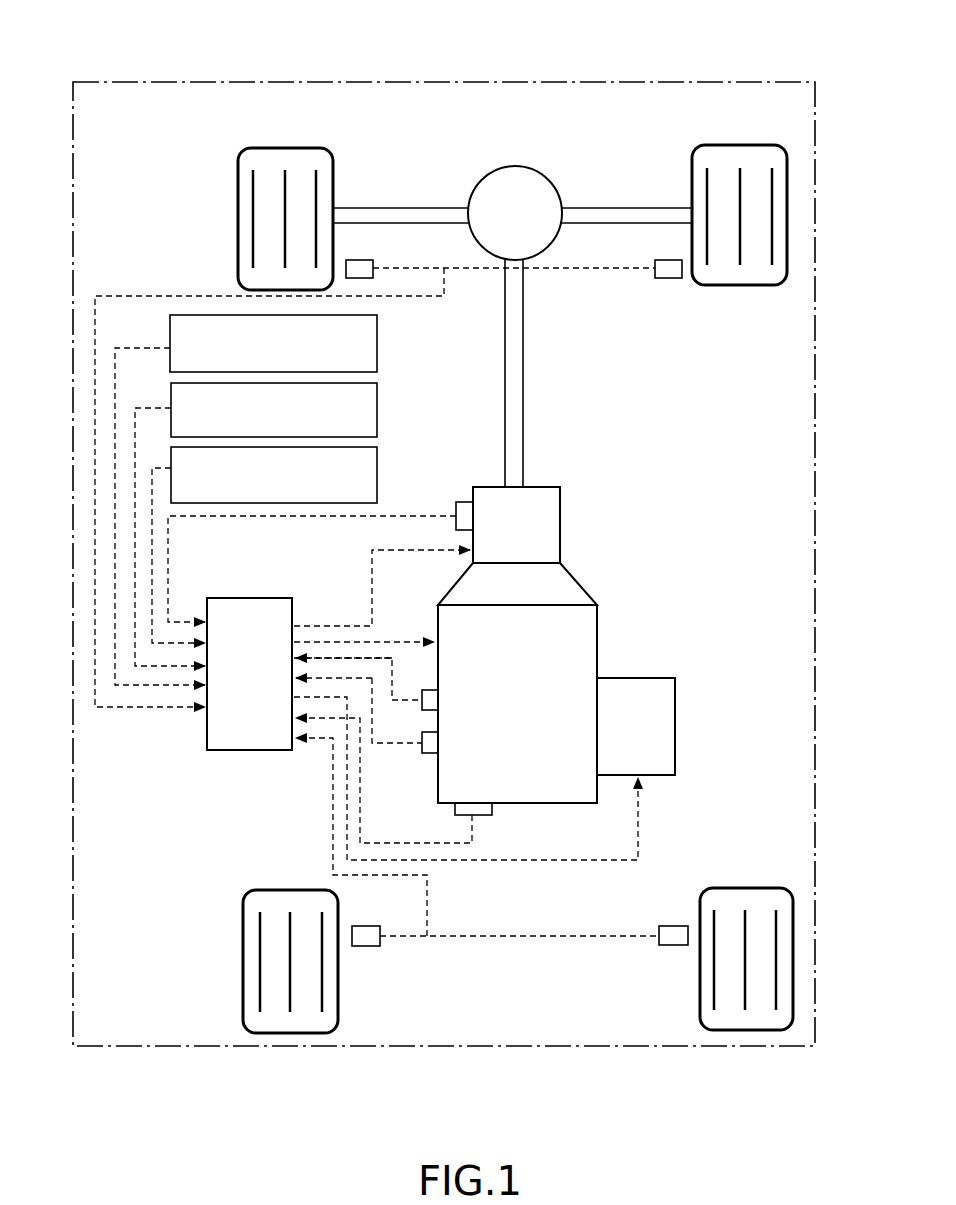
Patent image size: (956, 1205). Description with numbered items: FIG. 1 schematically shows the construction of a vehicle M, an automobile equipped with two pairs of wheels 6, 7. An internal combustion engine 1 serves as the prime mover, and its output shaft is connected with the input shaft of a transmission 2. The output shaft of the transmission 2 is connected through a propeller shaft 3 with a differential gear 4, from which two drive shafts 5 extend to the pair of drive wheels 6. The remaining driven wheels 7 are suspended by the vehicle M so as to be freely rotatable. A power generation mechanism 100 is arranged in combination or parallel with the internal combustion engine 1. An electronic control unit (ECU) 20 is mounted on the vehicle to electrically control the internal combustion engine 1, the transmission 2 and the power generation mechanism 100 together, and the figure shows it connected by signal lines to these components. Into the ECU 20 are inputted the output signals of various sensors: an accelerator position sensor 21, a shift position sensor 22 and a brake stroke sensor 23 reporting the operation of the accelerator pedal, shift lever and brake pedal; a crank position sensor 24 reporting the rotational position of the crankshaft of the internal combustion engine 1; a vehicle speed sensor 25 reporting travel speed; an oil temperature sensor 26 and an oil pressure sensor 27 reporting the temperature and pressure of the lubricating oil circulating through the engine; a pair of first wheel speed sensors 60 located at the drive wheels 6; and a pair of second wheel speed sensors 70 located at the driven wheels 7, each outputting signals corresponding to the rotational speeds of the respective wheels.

The vehicle M is at (598, 80).
The internal combustion engine 1 is at (597, 645).
The transmission 2 is at (560, 527).
The propeller shaft 3 is at (523, 386).
The differential gear 4 is at (512, 168).
The drive shafts 5 is at (396, 208).
The drive wheels 6 is at (238, 213).
The driven wheels 7 is at (243, 962).
The electronic control unit 20 is at (252, 750).
The accelerator position sensor 21 is at (377, 344).
The shift position sensor 22 is at (377, 404).
The brake stroke sensor 23 is at (377, 468).
The crank position sensor 24 is at (492, 812).
The vehicle speed sensor 25 is at (464, 500).
The oil temperature sensor 26 is at (422, 753).
The oil pressure sensor 27 is at (422, 710).
The first wheel speed sensors 60 is at (373, 260).
The second wheel speed sensors 70 is at (380, 945).
The power generation mechanism 100 is at (675, 723).